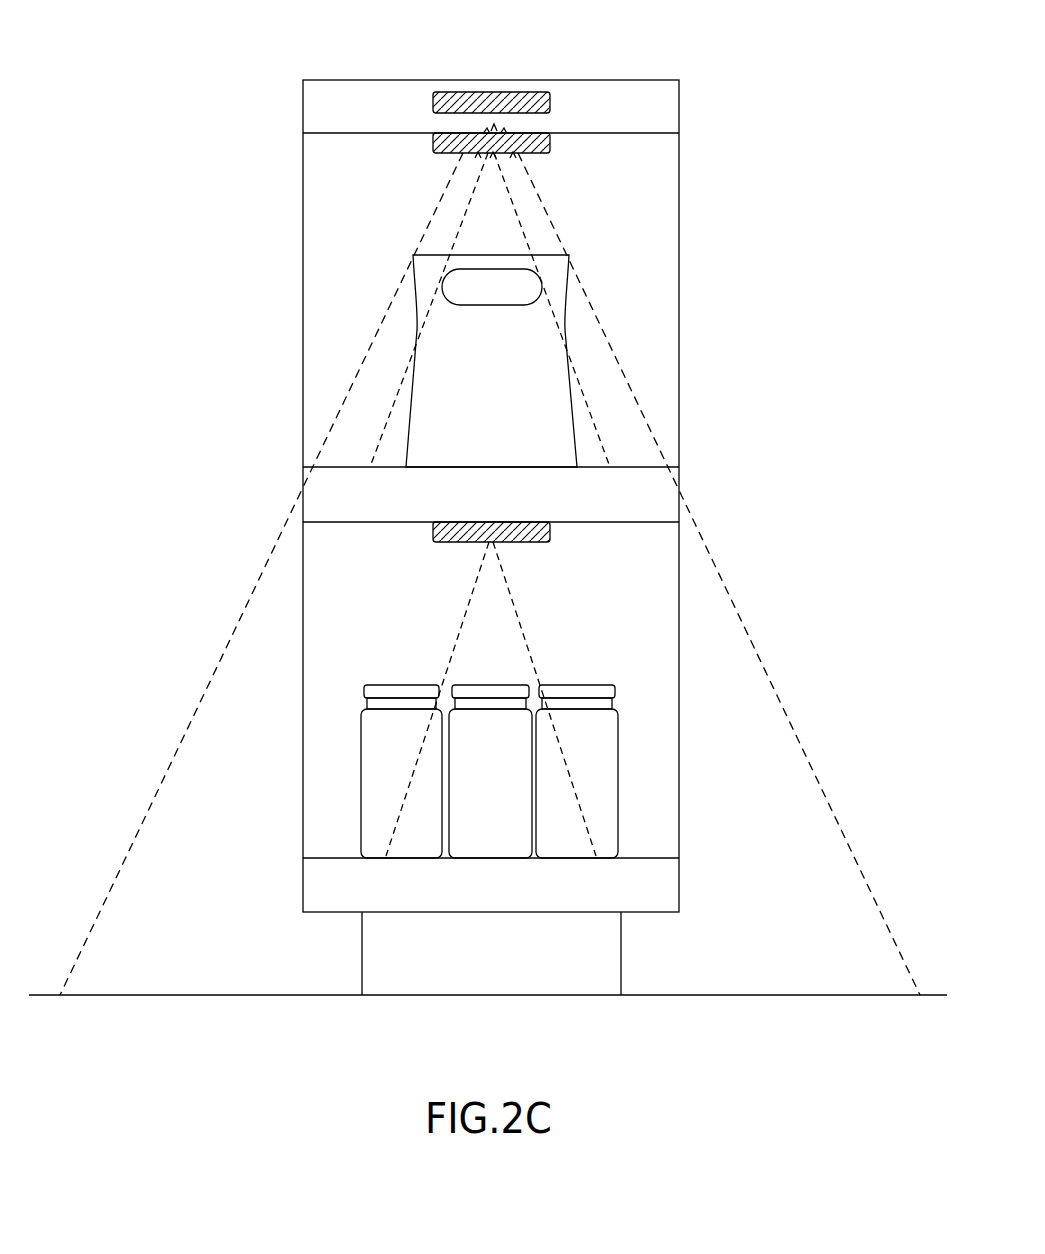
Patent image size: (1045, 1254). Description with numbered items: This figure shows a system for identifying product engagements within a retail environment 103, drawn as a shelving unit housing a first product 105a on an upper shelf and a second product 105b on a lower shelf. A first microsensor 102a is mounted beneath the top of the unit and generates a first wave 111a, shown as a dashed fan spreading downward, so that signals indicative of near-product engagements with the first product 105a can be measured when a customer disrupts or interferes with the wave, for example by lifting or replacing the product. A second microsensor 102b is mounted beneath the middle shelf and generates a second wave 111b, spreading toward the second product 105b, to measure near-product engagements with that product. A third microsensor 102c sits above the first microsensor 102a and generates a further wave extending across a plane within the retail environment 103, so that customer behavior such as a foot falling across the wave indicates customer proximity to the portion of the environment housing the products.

The retail environment 103 is at (303, 112).
The first microsensor 102a is at (433, 143).
The second microsensor 102b is at (433, 536).
The third microsensor 102c is at (468, 92).
The first product 105a is at (417, 311).
The second product 105b is at (361, 737).
The first wave 111a is at (505, 584).
The second wave 111b is at (755, 655).